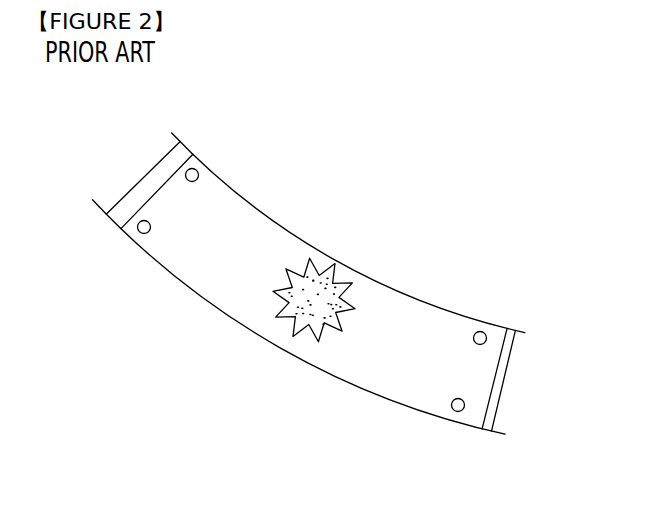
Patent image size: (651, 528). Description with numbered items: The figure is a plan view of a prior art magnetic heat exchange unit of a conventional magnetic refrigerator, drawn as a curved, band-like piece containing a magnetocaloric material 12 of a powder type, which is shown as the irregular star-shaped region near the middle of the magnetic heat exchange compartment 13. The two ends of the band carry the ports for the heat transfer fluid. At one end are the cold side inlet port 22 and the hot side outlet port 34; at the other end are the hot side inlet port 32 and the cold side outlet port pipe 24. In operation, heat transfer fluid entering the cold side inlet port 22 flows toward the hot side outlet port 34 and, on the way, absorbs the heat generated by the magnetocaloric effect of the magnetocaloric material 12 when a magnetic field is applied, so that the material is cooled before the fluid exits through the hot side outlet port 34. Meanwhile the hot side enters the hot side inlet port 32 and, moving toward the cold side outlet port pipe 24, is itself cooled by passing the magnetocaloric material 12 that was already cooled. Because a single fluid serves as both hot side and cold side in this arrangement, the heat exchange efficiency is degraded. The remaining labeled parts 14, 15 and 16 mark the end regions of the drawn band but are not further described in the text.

The magnetocaloric material 12 is at (350, 289).
The magnetic heat exchange compartment 13 is at (215, 260).
The end portions of the band 14 is at (125, 198).
The first end portion 15 is at (177, 205).
The second end portion 16 is at (470, 372).
The cold side inlet port 22 is at (139, 230).
The cold side outlet port pipe 24 is at (198, 172).
The hot side inlet port 32 is at (457, 412).
The hot side outlet port 34 is at (487, 335).